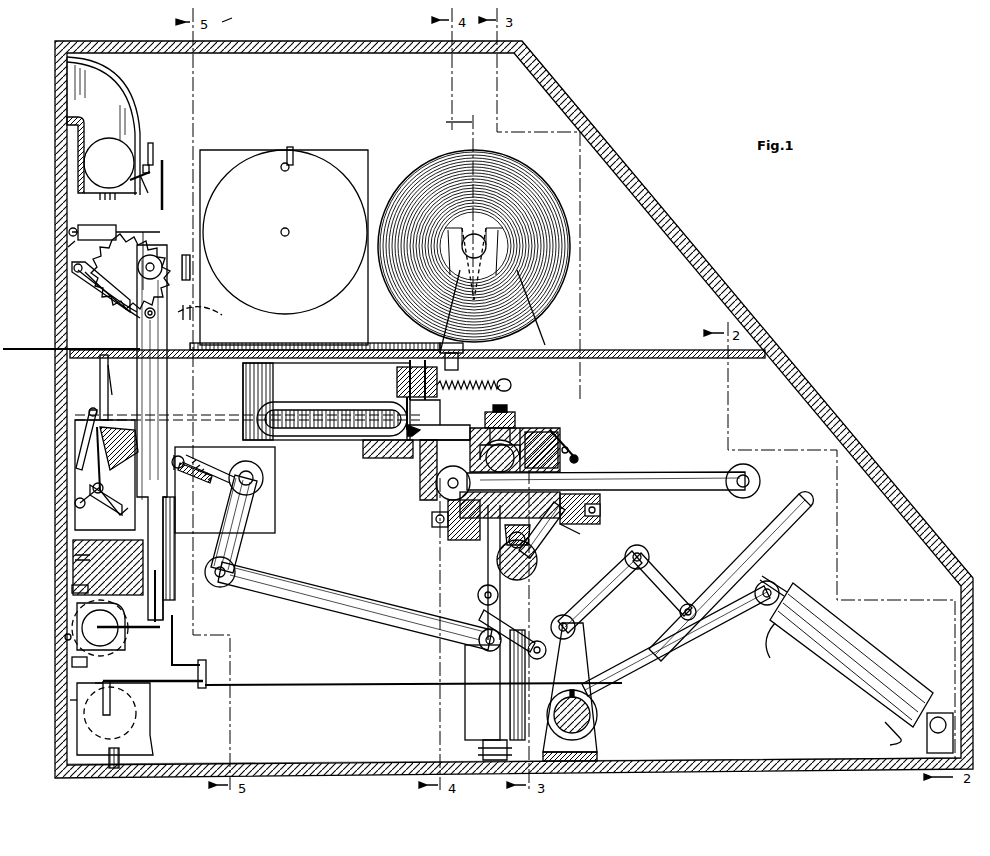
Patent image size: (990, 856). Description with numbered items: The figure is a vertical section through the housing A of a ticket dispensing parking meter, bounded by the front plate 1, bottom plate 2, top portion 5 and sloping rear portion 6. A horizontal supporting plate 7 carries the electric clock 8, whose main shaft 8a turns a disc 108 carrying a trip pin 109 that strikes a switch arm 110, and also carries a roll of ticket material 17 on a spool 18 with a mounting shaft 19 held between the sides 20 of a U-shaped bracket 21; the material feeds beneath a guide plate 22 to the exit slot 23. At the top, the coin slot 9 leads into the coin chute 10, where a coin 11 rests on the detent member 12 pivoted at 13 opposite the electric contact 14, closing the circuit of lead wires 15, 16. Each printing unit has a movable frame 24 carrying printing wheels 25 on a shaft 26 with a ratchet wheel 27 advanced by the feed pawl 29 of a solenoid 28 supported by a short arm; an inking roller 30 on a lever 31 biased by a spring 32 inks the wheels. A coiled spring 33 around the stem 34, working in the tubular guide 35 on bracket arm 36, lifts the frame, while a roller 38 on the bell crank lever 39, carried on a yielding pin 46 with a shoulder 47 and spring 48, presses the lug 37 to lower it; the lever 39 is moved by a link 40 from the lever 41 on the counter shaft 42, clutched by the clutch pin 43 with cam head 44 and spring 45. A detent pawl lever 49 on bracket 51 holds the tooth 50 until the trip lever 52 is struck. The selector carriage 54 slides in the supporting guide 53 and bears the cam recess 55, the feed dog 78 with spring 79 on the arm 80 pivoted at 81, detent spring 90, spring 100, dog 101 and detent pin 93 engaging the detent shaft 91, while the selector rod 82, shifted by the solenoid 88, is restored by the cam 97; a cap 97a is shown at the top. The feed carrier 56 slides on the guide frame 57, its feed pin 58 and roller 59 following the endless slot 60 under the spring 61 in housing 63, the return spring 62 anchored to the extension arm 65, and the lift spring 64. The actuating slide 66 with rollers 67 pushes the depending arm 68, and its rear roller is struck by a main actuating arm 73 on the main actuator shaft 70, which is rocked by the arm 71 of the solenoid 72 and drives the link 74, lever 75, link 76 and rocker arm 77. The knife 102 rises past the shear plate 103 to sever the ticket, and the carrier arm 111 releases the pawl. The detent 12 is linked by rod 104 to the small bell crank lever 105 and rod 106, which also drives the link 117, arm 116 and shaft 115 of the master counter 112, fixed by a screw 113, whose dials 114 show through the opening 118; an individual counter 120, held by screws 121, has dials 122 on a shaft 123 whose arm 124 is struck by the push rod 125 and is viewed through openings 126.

The front plate 1 is at (62, 404).
The bottom plate 2 is at (292, 760).
The top portion 5 is at (322, 54).
The rear portion 6 is at (722, 282).
The horizontal supporting plate 7 is at (600, 350).
The electric clock 8 is at (368, 150).
The clock main shaft 8a is at (288, 230).
The coin slot 9 is at (55, 86).
The coin chute 10 is at (132, 96).
The coin 11 is at (120, 150).
The coin detent member 12 is at (153, 165).
The pivot 13 is at (150, 186).
The electric contact 14 is at (89, 158).
The lead wire 15 is at (68, 157).
The lead wire 16 is at (152, 150).
The roll of ticket material 17 is at (570, 220).
The spool 18 is at (492, 218).
The mounting shaft member 19 is at (480, 254).
The bracket sides 20 is at (535, 330).
The U-shaped bracket member 21 is at (538, 344).
The guide plate 22 is at (340, 343).
The exit slot 23 is at (60, 356).
The vertically movable frame 24 is at (142, 326).
The printing wheels 25 is at (190, 267).
The supporting shaft 26 is at (153, 264).
The ratchet wheel 27 is at (160, 240).
The solenoid 28 is at (114, 223).
The feed pawl 29 is at (133, 238).
The inking roller 30 is at (206, 312).
The depressable lever 31 is at (70, 290).
The spring 32 is at (110, 300).
The coiled spring 33 is at (72, 553).
The stem 34 is at (170, 585).
The tubular guide portion 35 is at (133, 519).
The bracket arm 36 is at (72, 589).
The lug 37 is at (180, 475).
The roller 38 is at (190, 458).
The bell crank lever 39 is at (250, 508).
The link 40 is at (300, 580).
The lever 41 is at (538, 565).
The counter shaft 42 is at (553, 545).
The clutch pin 43 is at (492, 545).
The cam head 44 is at (602, 517).
The coiled expansion spring 45 is at (572, 533).
The yielding pin member 46 is at (246, 470).
The shoulder 47 is at (200, 485).
The coiled expansion spring 48 is at (215, 470).
The detent pawl lever 49 is at (110, 490).
The tooth 50 is at (128, 465).
The bracket 51 is at (78, 506).
The trip lever 52 is at (78, 452).
The supporting guide 53 is at (590, 504).
The selector carriage 54 is at (470, 530).
The cam recess 55 is at (517, 529).
The sleeve-like carrier 56 is at (395, 458).
The guide frame 57 is at (268, 387).
The feed pin 58 is at (445, 365).
The roller 59 is at (430, 413).
The endless horizontal slot 60 is at (340, 437).
The spring 61 is at (397, 373).
The spring 62 is at (511, 385).
The small housing 63 is at (412, 403).
The lift spring 64 is at (405, 433).
The extension arm 65 is at (470, 384).
The actuating slide 66 is at (600, 472).
The rollers 67 is at (760, 476).
The depending arm 68 is at (420, 490).
The main actuator shaft 70 is at (590, 715).
The arm 71 is at (706, 636).
The solenoid 72 is at (805, 650).
The main actuating arm 73 is at (778, 512).
The link 74 is at (660, 590).
The lever 75 is at (605, 593).
The link 76 is at (525, 630).
The rocker arm 77 is at (478, 593).
The feed dog 78 is at (512, 428).
The spring 79 is at (515, 416).
The arm 80 is at (555, 432).
The pivot 81 is at (538, 430).
The selector rod 82 is at (486, 458).
The solenoid 88 is at (468, 712).
The spring 90 is at (472, 452).
The guide and detent shaft 91 is at (566, 443).
The detent pin 93 is at (578, 459).
The cam 97 is at (432, 458).
The cap 97a is at (510, 405).
The spring 100 is at (570, 450).
The dog 101 is at (462, 483).
The knife 102 is at (112, 366).
The shear plate 103 is at (95, 364).
The rod 104 is at (165, 175).
The small bell crank lever 105 is at (210, 668).
The rod 106 is at (308, 684).
The disc 108 is at (330, 150).
The trip pin 109 is at (283, 164).
The switch arm 110 is at (293, 147).
The forwardly extending arm 111 is at (240, 415).
The master counter 112 is at (85, 737).
The screw 113 is at (120, 756).
The dials 114 is at (62, 722).
The shaft 115 is at (95, 683).
The arm 116 is at (112, 700).
The link 117 is at (163, 684).
The opening 118 is at (70, 703).
The individual counter 120 is at (120, 650).
The screws 121 is at (88, 662).
The dials 122 is at (70, 628).
The shaft 123 is at (88, 620).
The arm 124 is at (132, 629).
The push rod 125 is at (160, 612).
The openings 126 is at (66, 640).
The housing A is at (668, 202).